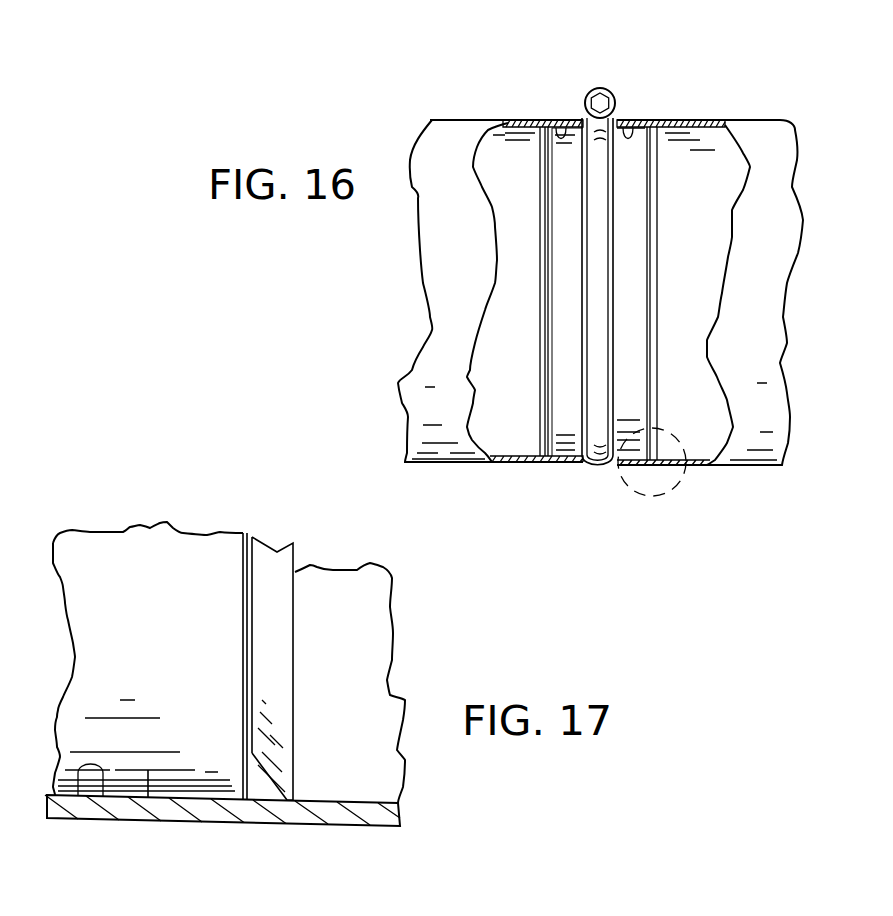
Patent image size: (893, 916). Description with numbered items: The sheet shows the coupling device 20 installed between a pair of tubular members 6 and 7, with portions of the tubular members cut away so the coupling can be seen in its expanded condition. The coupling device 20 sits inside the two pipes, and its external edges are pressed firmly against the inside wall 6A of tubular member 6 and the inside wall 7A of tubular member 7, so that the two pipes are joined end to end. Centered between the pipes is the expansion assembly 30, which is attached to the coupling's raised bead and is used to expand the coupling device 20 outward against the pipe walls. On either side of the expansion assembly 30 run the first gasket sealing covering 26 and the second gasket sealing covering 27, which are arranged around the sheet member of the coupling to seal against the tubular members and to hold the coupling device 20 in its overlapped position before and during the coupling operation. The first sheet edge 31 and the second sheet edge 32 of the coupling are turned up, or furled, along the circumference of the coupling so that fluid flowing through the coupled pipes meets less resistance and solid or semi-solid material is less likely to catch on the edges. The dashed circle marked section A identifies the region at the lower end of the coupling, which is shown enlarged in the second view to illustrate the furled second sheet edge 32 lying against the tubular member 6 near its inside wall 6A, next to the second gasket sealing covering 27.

In FIG. 16, the tubular member 7 is at (455, 130).
In FIG. 16, the first sheet edge 31 is at (527, 128).
In FIG. 16, the inside wall 7A is at (560, 128).
In FIG. 16, the expansion assembly 30 is at (604, 82).
In FIG. 16, the inside wall 6A is at (628, 130).
In FIG. 17, the inside wall 6A is at (83, 796).
In FIG. 16, the second sheet edge 32 is at (650, 128).
In FIG. 17, the second sheet edge 32 is at (273, 798).
In FIG. 16, the tubular member 6 is at (757, 135).
In FIG. 17, the tubular member 6 is at (342, 825).
In FIG. 16, the second gasket sealing covering 27 is at (565, 335).
In FIG. 17, the second gasket sealing covering 27 is at (148, 797).
In FIG. 16, the first gasket sealing covering 26 is at (632, 305).
In FIG. 16, the coupling device 20 is at (601, 289).
In FIG. 16, the section A is at (670, 476).